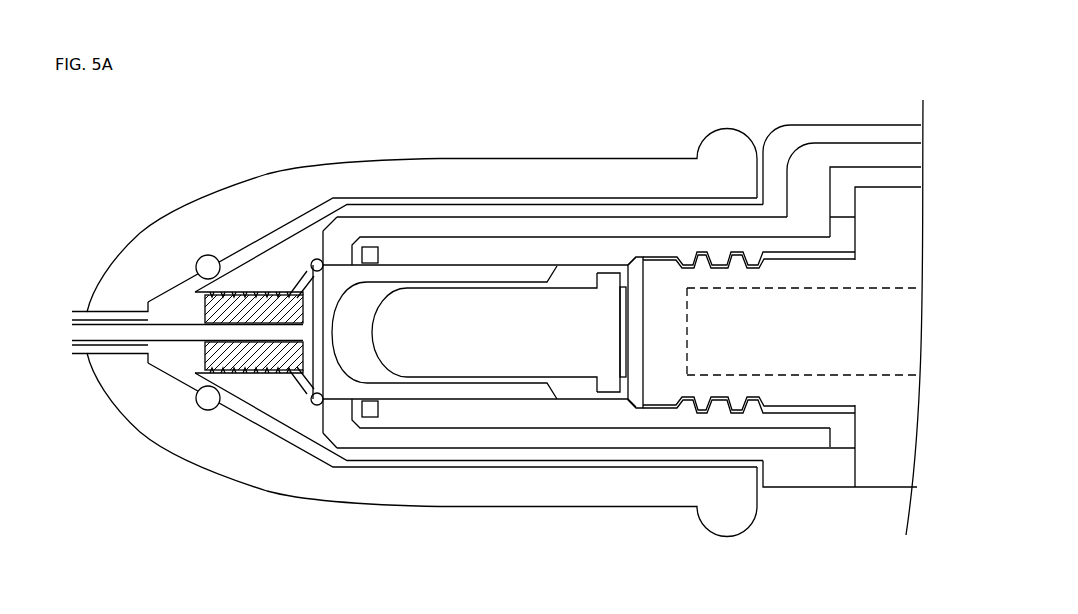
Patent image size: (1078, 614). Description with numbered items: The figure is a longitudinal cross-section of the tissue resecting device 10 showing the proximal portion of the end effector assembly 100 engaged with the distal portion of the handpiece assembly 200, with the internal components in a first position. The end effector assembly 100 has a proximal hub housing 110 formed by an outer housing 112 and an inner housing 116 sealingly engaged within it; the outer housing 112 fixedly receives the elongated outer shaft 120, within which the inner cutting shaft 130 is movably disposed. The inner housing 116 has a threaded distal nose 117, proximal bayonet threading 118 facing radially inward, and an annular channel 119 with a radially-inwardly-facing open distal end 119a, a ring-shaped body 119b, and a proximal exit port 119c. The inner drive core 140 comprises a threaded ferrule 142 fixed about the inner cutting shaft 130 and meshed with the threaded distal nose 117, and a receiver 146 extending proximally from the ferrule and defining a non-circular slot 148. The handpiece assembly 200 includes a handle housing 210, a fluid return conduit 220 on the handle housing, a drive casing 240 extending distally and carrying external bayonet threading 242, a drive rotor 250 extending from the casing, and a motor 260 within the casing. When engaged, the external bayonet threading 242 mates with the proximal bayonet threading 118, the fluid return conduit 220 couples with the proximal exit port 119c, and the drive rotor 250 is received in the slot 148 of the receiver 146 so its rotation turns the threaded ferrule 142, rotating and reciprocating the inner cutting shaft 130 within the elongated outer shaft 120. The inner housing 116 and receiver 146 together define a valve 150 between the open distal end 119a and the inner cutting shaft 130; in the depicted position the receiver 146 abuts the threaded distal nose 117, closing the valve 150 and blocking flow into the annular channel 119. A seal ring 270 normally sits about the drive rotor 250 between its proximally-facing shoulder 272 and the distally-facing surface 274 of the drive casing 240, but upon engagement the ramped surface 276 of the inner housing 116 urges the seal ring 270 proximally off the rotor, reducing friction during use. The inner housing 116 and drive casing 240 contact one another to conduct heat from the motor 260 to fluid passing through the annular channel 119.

The tissue resecting device 10 is at (246, 122).
The end effector assembly 100 is at (529, 127).
The proximal hub housing 110 is at (382, 173).
The outer housing 112 is at (330, 487).
The inner housing 116 is at (438, 453).
The threaded distal nose 117 is at (260, 273).
The proximal bayonet threading 118 is at (753, 413).
The annular channel 119 is at (522, 437).
The radially-inwardly-facing open distal end 119a is at (338, 243).
The ring-shaped body 119b is at (510, 225).
The proximal exit port 119c is at (793, 187).
The elongated outer shaft 120 is at (86, 354).
The inner cutting shaft 130 is at (73, 325).
The inner drive core 140 is at (402, 413).
The threaded ferrule 142 is at (195, 293).
The receiver 146 is at (338, 290).
The slot 148 is at (362, 313).
The valve 150 is at (298, 397).
The handpiece assembly 200 is at (903, 103).
The handle housing 210 is at (893, 477).
The fluid return conduit 220 is at (880, 133).
The drive casing 240 is at (797, 185).
The external bayonet threading 242 is at (746, 400).
The drive rotor 250 is at (540, 327).
The motor 260 is at (877, 345).
The seal ring 270 is at (637, 392).
The proximally-facing shoulder 272 is at (622, 395).
The distally-facing surface 274 is at (645, 385).
The ramped surface 276 is at (627, 260).